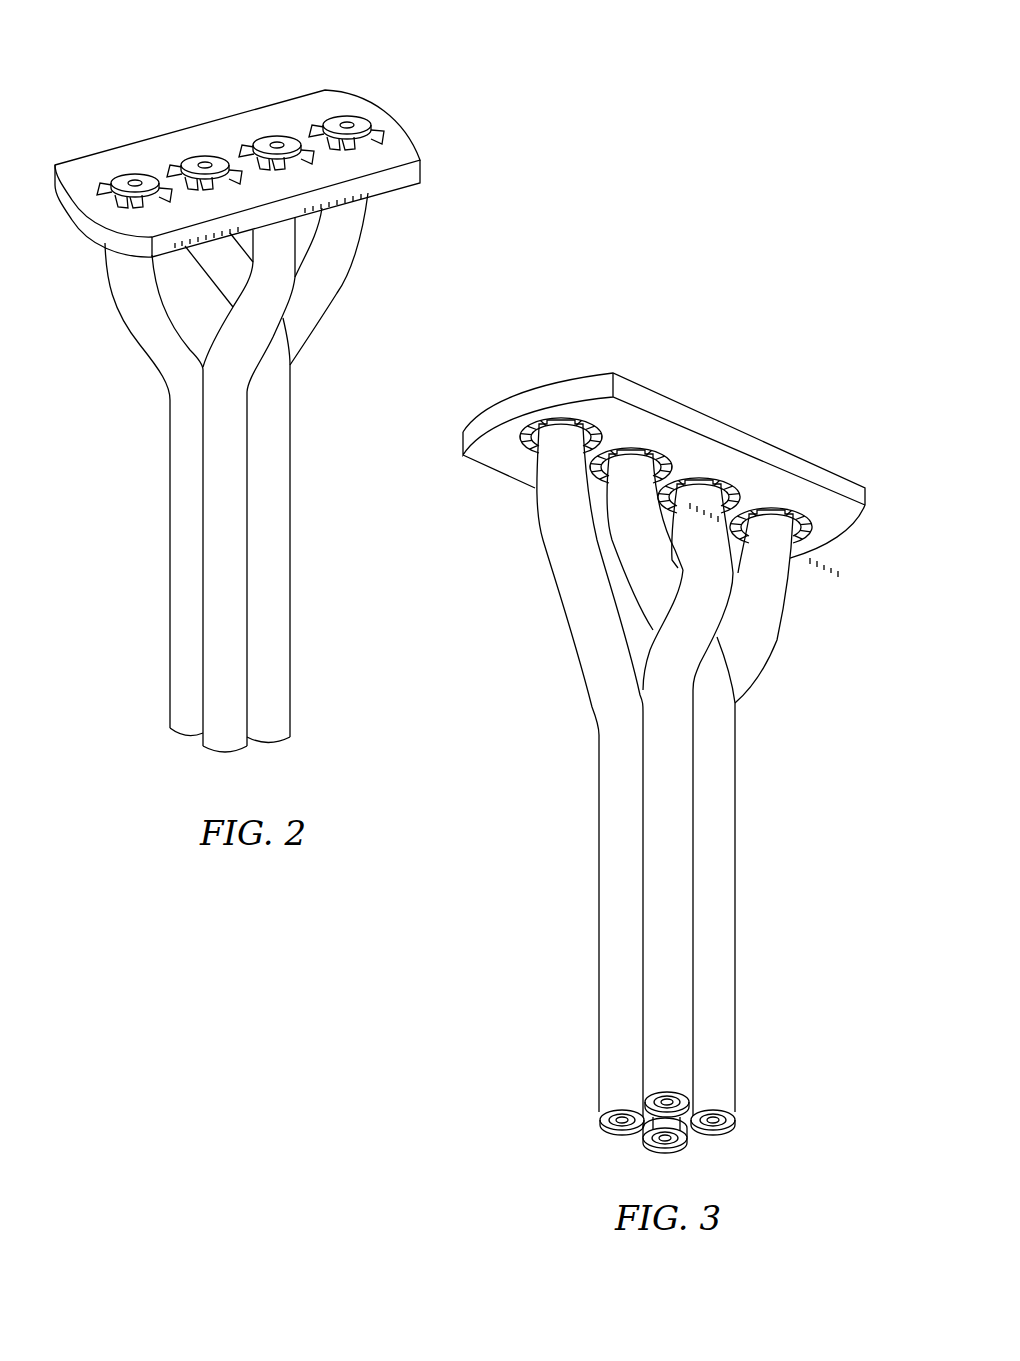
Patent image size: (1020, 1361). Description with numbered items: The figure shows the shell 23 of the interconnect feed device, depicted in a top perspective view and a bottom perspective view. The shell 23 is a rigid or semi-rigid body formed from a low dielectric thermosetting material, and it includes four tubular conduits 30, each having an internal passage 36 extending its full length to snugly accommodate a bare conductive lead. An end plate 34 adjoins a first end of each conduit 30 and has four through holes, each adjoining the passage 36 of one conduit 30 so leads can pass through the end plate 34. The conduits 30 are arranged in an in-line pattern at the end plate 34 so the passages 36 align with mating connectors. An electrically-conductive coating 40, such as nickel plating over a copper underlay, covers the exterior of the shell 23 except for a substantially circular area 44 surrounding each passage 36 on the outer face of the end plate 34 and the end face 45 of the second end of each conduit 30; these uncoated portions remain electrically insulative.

In FIG. 2, the shell 23 is at (249, 409).
In FIG. 3, the shell 23 is at (666, 780).
In FIG. 2, the tubular conduit 30 is at (337, 295).
In FIG. 3, the tubular conduit 30 is at (620, 1130).
In FIG. 2, the end plate 34 is at (418, 150).
In FIG. 3, the end plate 34 is at (645, 397).
In FIG. 2, the internal passage 36 is at (133, 178).
In FIG. 2, the electrically-conductive coating 40 is at (72, 170).
In FIG. 3, the electrically-conductive coating 40 is at (607, 917).
In FIG. 2, the substantially circular area 44 is at (127, 192).
In FIG. 3, the end face 45 is at (602, 1126).